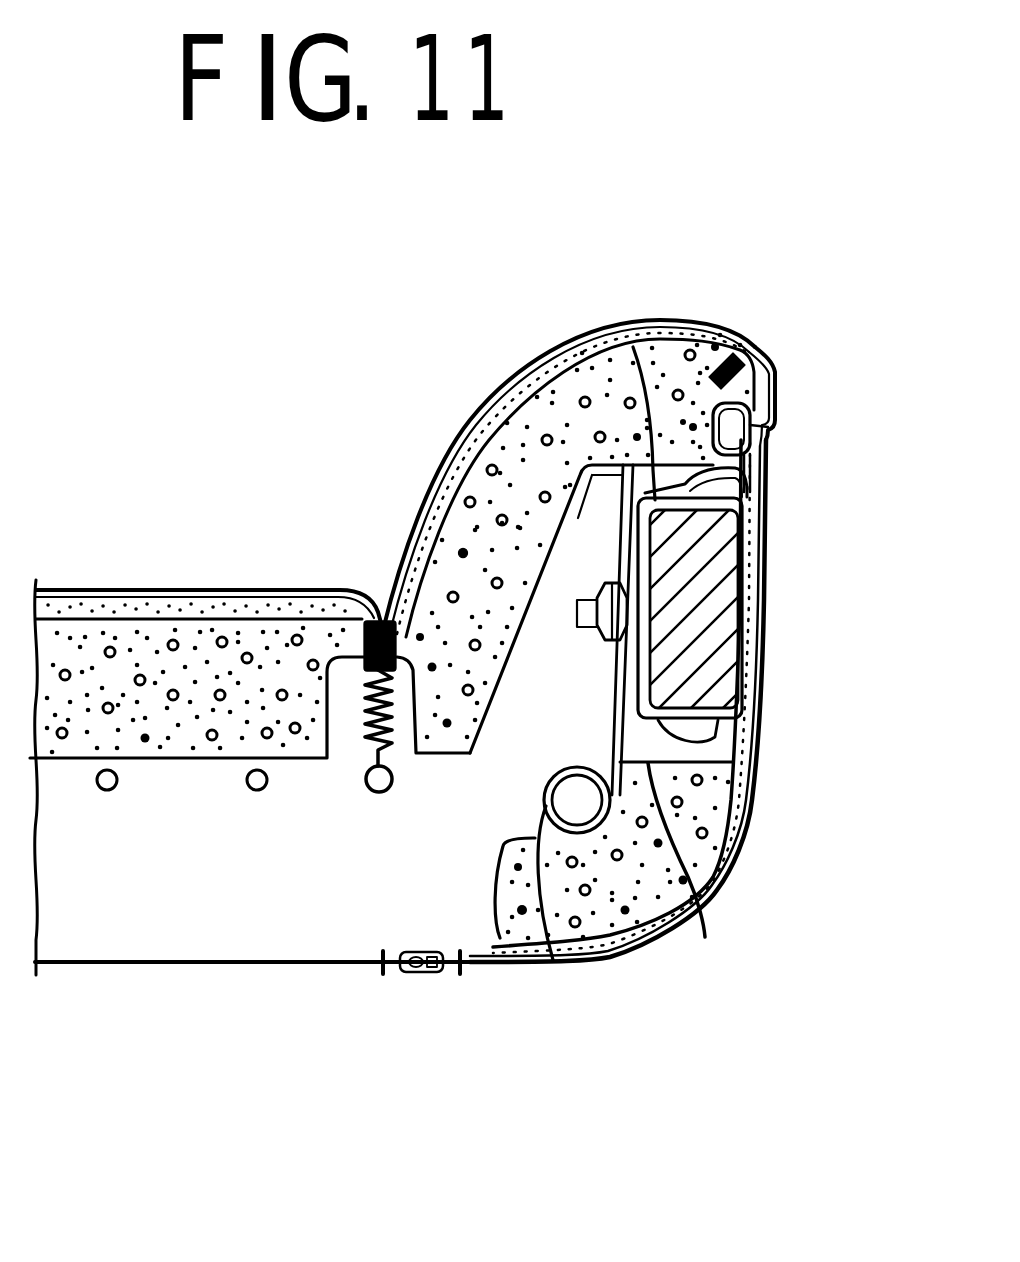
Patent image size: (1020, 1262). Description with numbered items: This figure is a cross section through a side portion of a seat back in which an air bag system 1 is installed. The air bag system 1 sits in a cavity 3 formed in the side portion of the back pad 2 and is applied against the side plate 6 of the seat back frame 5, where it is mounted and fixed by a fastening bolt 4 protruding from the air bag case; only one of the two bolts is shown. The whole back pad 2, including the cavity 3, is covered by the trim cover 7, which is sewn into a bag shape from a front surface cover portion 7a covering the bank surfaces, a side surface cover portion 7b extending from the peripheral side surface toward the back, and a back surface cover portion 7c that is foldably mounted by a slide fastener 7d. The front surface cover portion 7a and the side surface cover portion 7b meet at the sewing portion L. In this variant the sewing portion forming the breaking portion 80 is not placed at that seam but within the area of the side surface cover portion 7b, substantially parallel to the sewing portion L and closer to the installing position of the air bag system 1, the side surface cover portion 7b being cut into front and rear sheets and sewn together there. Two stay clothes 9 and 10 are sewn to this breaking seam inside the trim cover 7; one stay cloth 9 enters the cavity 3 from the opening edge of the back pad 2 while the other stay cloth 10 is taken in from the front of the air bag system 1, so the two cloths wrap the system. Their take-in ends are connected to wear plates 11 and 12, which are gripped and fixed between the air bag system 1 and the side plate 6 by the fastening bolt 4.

The air bag system 1 is at (762, 585).
The back pad 2 is at (497, 902).
The cavity 3 is at (740, 740).
The fastening bolt 4 is at (577, 617).
The seat back frame 5 is at (553, 960).
The side plate 6 is at (621, 562).
The trim cover 7 is at (500, 366).
The front surface cover portion 7a is at (586, 337).
The side surface cover portion 7b is at (766, 503).
The back surface cover portion 7c is at (215, 967).
The slide fastener 7d is at (417, 977).
The stay cloth 9 is at (712, 437).
The stay cloth 10 is at (760, 653).
The wear plate 11 is at (633, 347).
The wear plate 12 is at (705, 937).
The breaking portion 80 is at (770, 430).
The sewing portion L is at (754, 353).